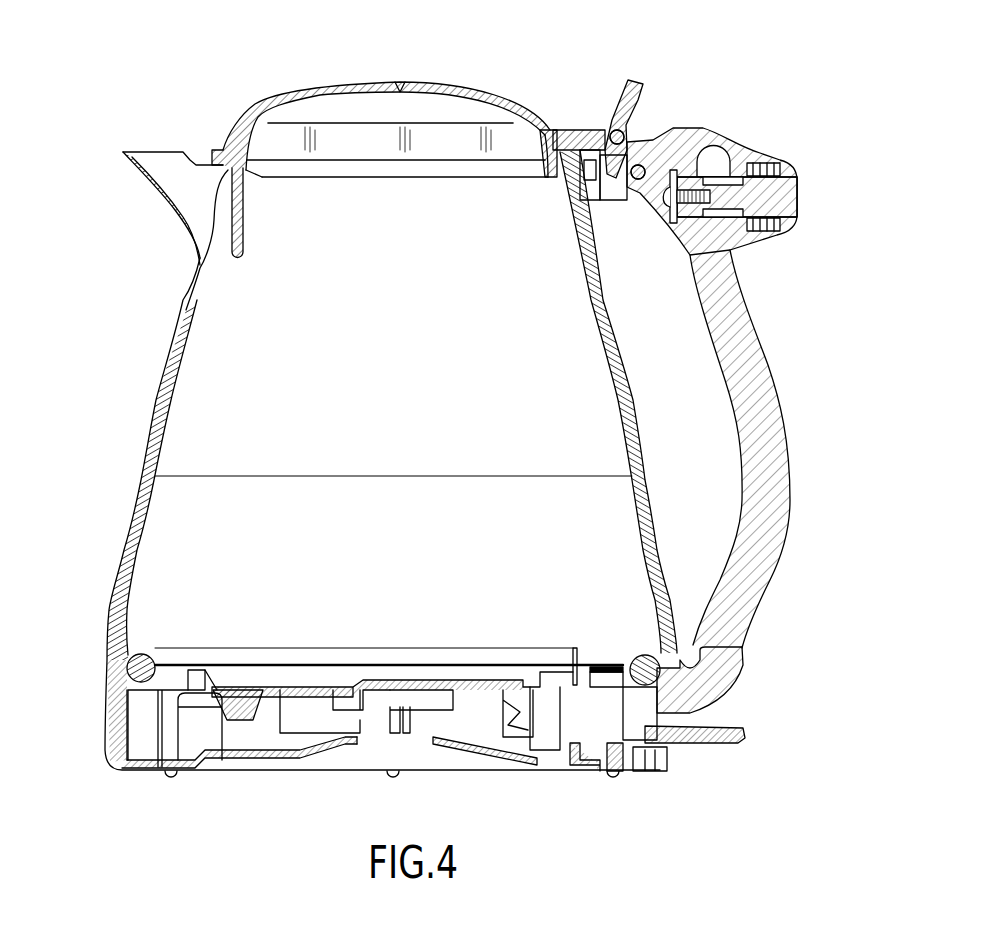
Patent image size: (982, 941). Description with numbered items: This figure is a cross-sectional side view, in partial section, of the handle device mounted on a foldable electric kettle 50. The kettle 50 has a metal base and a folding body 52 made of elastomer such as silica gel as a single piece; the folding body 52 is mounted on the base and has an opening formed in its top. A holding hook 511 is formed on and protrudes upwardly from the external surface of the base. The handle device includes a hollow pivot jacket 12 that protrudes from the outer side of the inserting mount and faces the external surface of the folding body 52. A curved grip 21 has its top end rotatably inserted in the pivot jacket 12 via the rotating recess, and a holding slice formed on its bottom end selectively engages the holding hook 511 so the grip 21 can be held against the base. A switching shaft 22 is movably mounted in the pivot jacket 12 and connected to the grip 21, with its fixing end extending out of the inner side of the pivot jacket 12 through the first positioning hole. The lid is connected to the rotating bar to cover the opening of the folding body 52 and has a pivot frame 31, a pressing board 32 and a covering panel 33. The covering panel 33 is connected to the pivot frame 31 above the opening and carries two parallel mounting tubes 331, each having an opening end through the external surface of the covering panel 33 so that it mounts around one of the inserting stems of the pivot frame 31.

The foldable electric kettle 50 is at (133, 330).
The folding body 52 is at (140, 493).
The covering panel 33 is at (340, 83).
The mounting tubes 331 is at (360, 150).
The pivot frame 31 is at (575, 131).
The pressing board 32 is at (622, 89).
The pivot jacket 12 is at (711, 130).
The switching shaft 22 is at (794, 180).
The grip 21 is at (761, 341).
The holding hook 511 is at (710, 686).